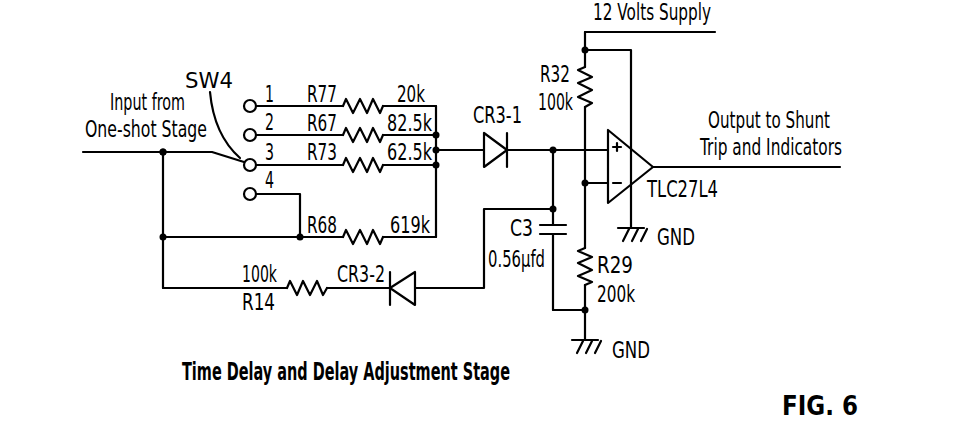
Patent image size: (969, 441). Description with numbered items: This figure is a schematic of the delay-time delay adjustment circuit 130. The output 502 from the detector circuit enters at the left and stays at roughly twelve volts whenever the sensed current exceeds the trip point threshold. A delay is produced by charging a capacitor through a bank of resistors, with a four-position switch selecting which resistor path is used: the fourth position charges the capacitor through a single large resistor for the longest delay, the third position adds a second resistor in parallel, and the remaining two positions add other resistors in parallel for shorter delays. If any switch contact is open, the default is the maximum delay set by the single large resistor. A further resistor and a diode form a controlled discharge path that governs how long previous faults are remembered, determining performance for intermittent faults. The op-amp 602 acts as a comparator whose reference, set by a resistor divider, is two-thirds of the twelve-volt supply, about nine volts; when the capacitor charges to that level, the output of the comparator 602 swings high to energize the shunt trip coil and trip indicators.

The delay-time delay adjustment circuit 130 is at (205, 30).
The output from the detector circuit 502 is at (162, 156).
The op-amp 602 is at (642, 158).